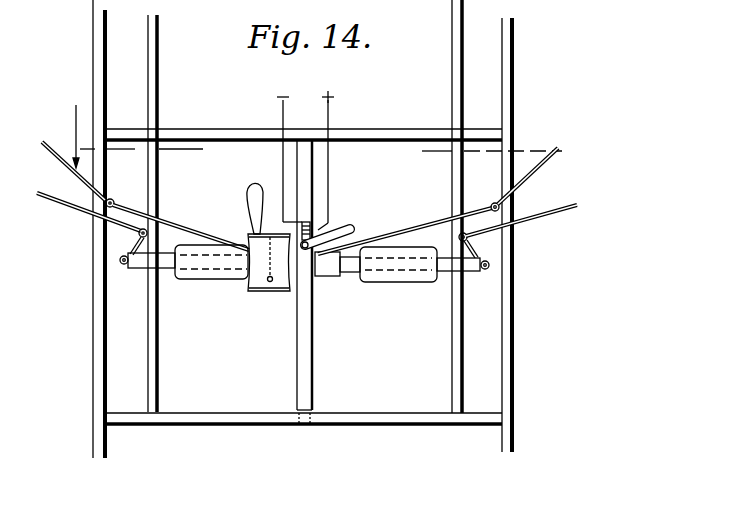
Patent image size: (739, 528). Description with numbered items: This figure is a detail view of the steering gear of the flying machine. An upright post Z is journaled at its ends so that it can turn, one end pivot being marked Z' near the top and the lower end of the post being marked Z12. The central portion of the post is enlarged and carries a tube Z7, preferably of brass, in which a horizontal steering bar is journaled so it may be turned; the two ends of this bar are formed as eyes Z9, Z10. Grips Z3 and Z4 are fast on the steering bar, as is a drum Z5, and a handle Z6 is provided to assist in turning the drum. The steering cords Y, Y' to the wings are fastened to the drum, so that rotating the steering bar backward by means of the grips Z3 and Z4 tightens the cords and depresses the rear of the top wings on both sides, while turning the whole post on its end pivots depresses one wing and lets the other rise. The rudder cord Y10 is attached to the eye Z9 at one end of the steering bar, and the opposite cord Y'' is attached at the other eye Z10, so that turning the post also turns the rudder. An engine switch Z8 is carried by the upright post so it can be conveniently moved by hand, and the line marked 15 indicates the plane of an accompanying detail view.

The section line 15- 15 is at (560, 148).
The steering cord Y is at (181, 223).
The steering cord Y' is at (405, 230).
The rod Y'' is at (518, 231).
The rudder cord Y10 is at (80, 212).
The upright post Z is at (314, 275).
The end pivot Z' is at (305, 165).
The grip Z3 is at (410, 275).
The grip Z4 is at (203, 273).
The drum Z5 is at (270, 292).
The handle Z6 is at (250, 192).
The tube Z7 is at (321, 277).
The engine switch Z8 is at (352, 228).
The steering bar end Z9 is at (131, 268).
The steering bar end Z10 is at (477, 272).
The shaft end Z12 is at (304, 424).